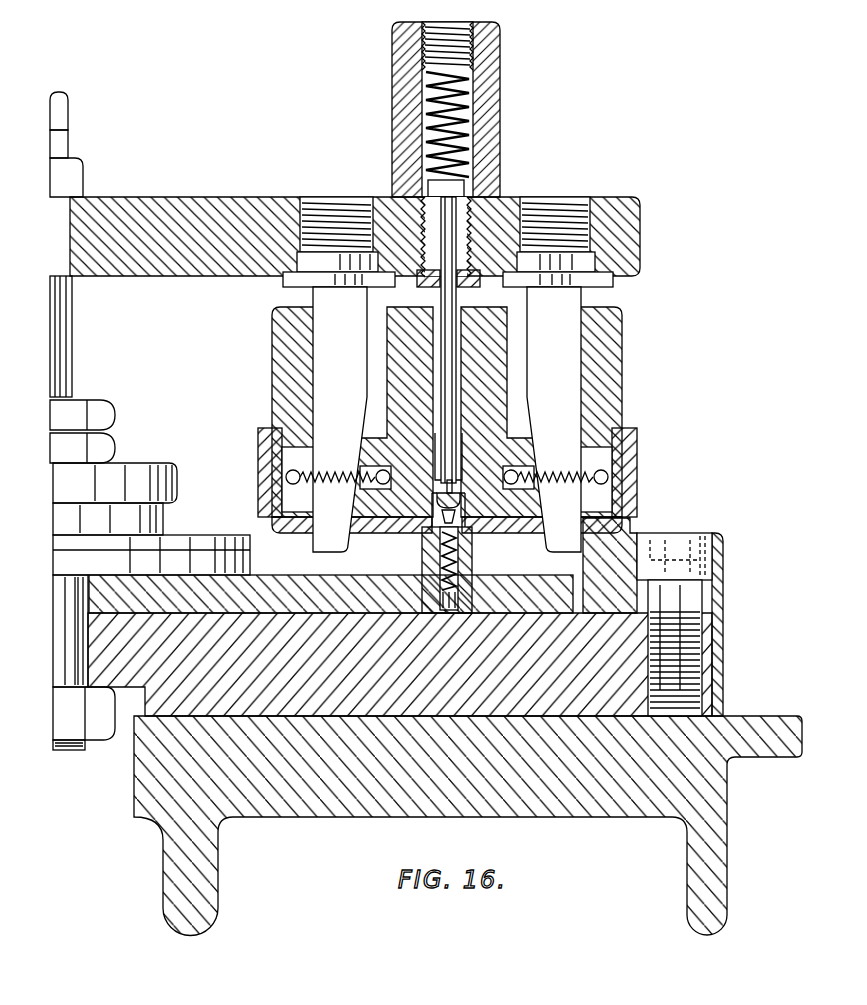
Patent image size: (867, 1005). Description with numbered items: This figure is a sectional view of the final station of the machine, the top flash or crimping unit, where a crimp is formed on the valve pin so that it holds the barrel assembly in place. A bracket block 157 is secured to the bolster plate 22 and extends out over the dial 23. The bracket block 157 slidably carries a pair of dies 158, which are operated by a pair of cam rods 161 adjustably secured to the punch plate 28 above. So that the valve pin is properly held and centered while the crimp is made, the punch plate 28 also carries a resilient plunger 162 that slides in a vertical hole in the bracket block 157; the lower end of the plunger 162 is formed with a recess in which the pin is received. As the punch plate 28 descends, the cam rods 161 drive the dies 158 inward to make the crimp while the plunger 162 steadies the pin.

The punch plate 28 is at (628, 225).
The cam rods 161 is at (330, 363).
The resilient plunger 162 is at (457, 298).
The dies 158 is at (372, 507).
The bracket block 157 is at (620, 543).
The bolster plate 22 is at (712, 662).
The dial 23 is at (298, 583).